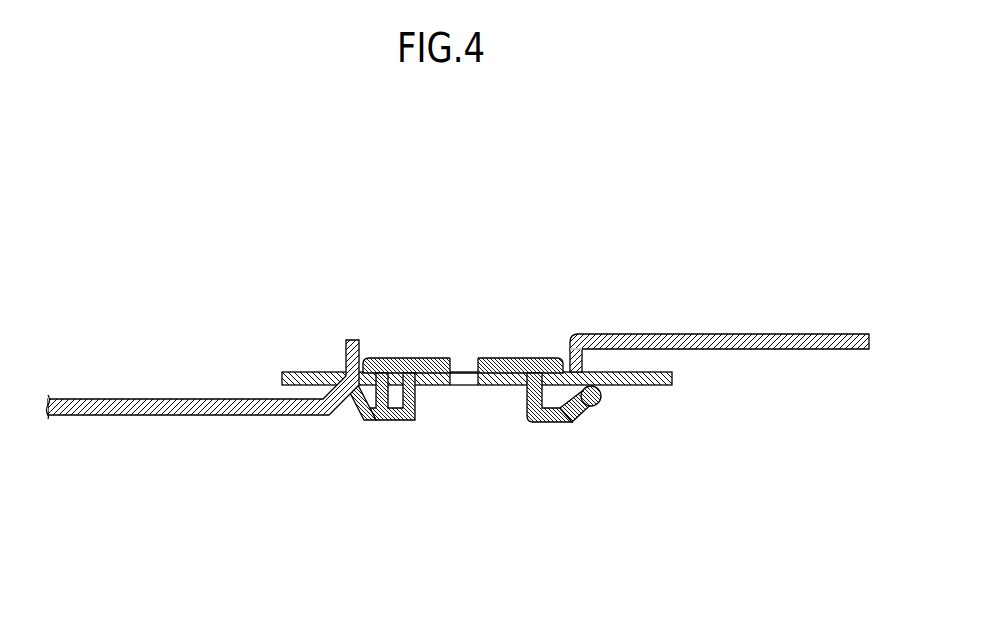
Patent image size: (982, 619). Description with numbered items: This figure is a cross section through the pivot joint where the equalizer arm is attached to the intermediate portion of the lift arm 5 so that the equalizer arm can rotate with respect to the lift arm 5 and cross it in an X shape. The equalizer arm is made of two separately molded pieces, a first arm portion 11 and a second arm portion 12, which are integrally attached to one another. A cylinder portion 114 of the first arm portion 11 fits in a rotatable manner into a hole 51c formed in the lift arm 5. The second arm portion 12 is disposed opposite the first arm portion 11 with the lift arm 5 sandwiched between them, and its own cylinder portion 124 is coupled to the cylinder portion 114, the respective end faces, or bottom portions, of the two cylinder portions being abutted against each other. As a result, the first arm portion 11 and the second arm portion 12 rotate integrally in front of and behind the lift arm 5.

The lift arm 5 is at (294, 372).
The hole 51c is at (386, 358).
The cylinder portion 114 is at (403, 420).
The first arm portion 11 is at (155, 415).
The second arm portion 12 is at (606, 334).
The cylinder portion 124 is at (582, 351).